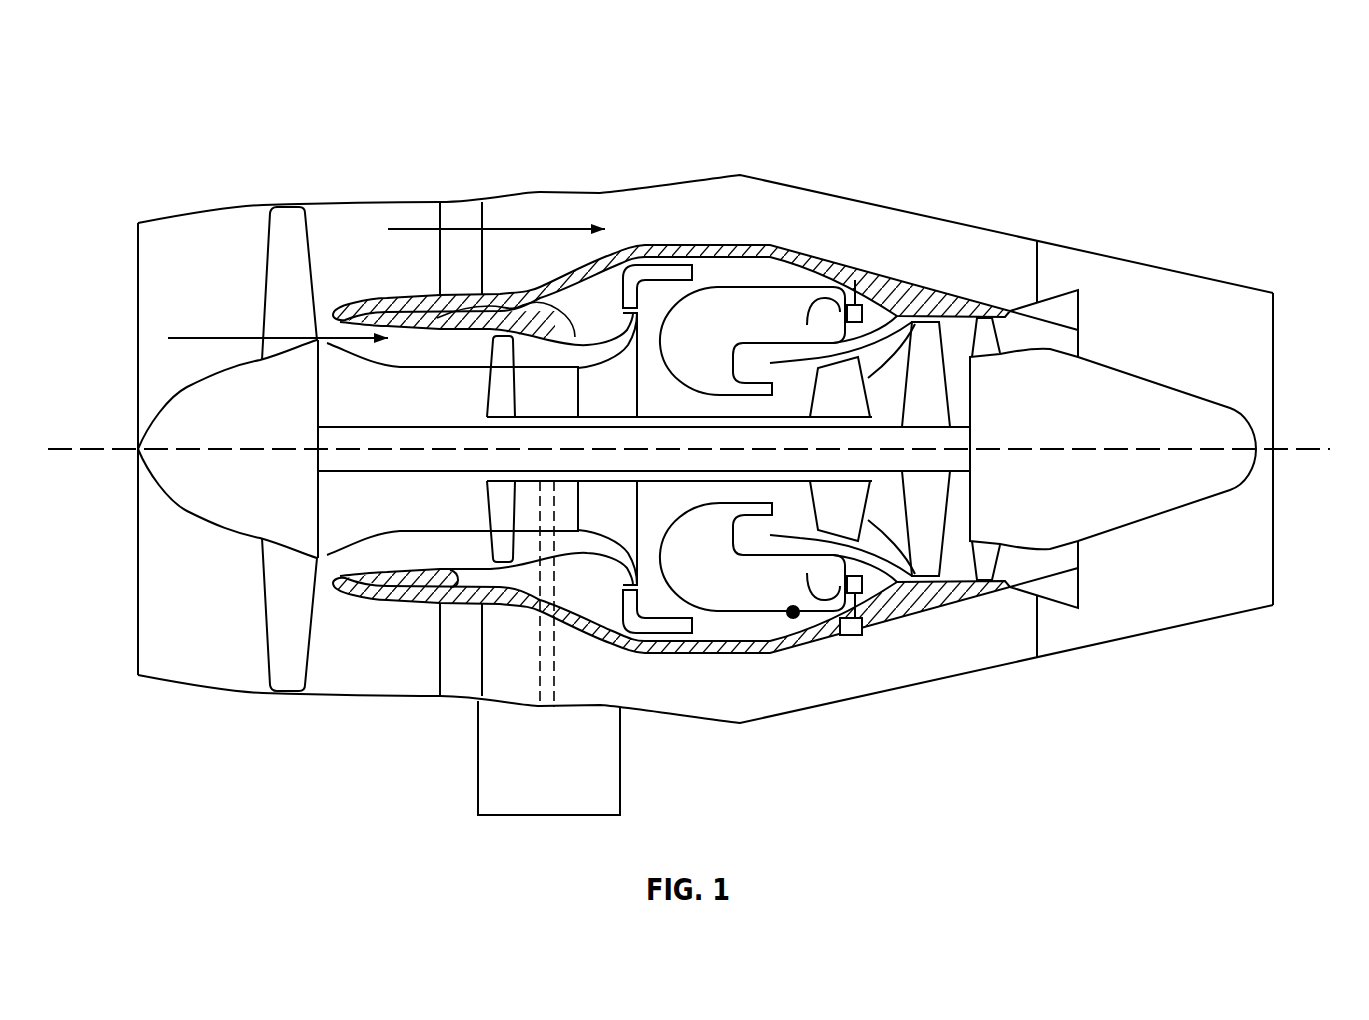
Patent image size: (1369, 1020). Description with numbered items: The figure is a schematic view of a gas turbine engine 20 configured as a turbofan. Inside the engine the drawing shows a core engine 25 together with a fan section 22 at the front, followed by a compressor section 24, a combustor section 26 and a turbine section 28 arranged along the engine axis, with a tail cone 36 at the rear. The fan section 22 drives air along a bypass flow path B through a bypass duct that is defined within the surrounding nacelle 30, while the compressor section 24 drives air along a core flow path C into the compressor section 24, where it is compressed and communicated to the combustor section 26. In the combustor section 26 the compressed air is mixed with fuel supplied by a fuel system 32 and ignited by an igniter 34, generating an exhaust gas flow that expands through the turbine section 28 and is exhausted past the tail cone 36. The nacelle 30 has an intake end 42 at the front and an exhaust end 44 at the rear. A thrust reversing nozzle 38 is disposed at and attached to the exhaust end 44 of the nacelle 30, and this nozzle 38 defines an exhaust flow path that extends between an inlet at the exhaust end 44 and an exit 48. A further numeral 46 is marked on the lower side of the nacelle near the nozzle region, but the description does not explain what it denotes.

The gas turbine engine 20 is at (165, 78).
The fan section 22 is at (250, 190).
The compressor section 24 is at (505, 305).
The core engine 25 is at (397, 648).
The combustor section 26 is at (760, 305).
The turbine section 28 is at (950, 322).
The nacelle 30 is at (958, 217).
The fuel system 32 is at (850, 628).
The igniter 34 is at (793, 624).
The tail cone 36 is at (1153, 405).
The thrust reversing nozzle 38 is at (1137, 618).
The intake end 42 is at (136, 305).
The exhaust end 44 is at (1042, 263).
The fan nozzle strut 46 is at (1034, 631).
The exit 48 is at (1281, 333).
The bypass flow path B is at (410, 230).
The core flow path C is at (217, 340).